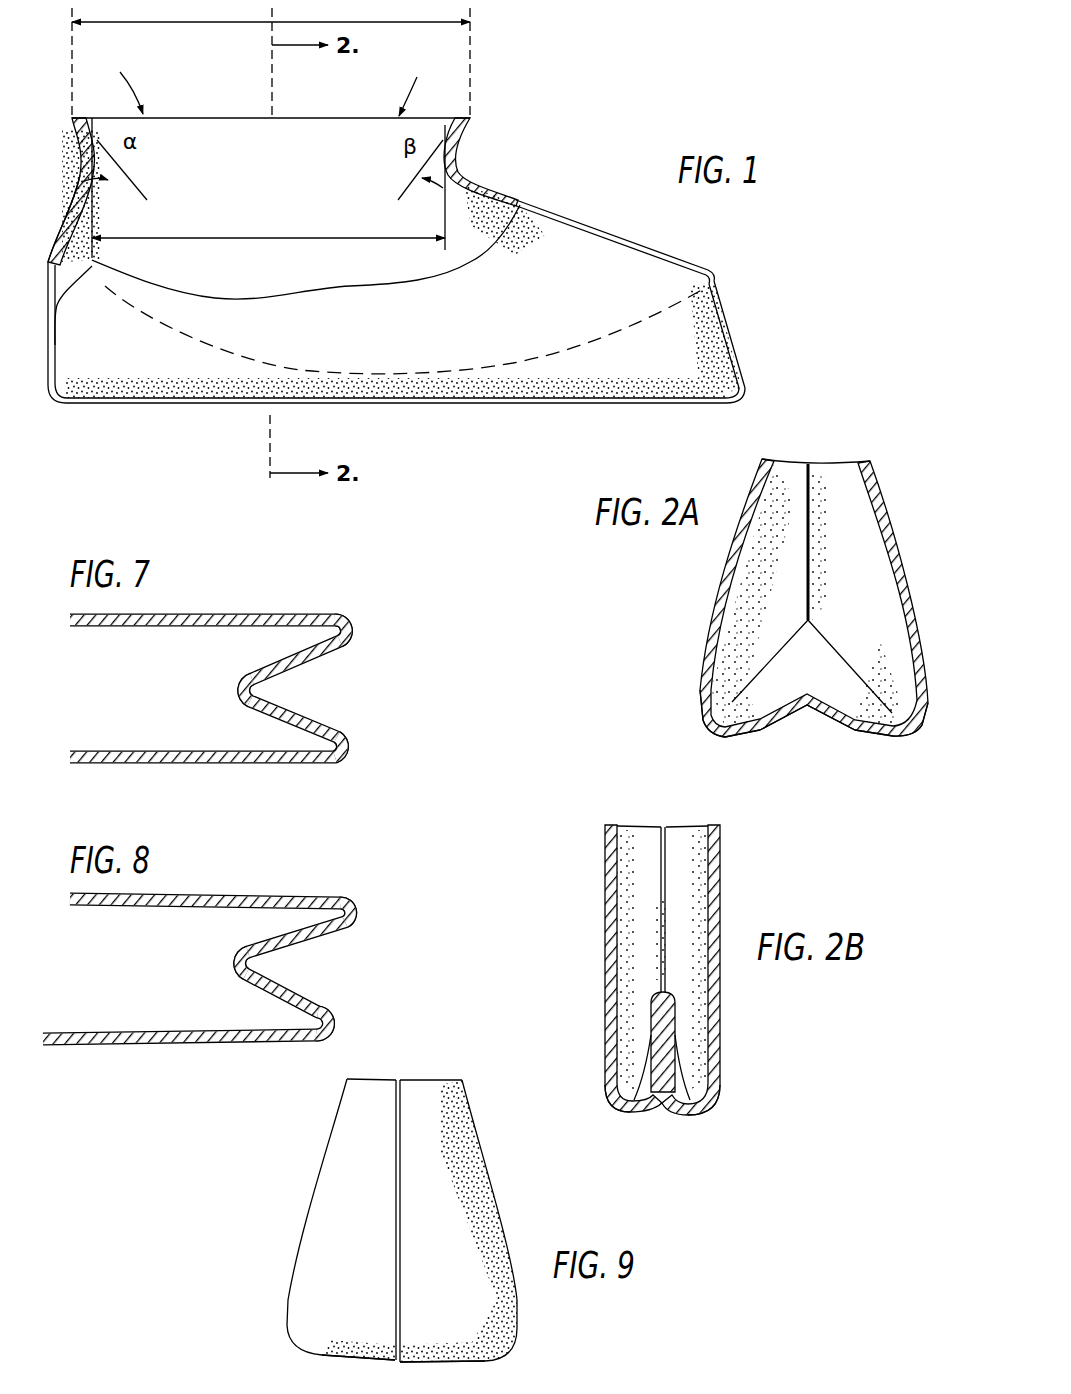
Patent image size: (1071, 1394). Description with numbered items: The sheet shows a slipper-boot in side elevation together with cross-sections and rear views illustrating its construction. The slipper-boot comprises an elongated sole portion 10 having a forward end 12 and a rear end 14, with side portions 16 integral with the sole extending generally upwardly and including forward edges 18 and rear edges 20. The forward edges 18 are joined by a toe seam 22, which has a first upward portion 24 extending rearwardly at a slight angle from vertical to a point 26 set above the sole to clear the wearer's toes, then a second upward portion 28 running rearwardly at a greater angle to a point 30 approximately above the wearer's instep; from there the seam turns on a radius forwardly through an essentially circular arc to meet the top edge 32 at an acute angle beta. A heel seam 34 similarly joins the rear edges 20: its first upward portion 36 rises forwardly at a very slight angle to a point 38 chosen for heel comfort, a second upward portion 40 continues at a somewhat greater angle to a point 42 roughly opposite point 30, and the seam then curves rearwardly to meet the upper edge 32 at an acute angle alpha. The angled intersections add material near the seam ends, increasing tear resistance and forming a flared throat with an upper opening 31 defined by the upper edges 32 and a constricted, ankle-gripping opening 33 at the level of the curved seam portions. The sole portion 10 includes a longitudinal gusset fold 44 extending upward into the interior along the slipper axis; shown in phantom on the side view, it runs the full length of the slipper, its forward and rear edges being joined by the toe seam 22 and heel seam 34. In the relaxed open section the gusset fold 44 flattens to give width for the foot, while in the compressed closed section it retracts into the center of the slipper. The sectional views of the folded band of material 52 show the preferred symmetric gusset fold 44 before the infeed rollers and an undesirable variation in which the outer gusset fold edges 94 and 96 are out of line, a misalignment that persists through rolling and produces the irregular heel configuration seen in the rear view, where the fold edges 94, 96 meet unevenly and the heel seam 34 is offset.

In FIG. 1, the elongated sole portion 10 is at (378, 405).
In FIG. 2A, the elongated sole portion 10 is at (744, 738).
In FIG. 2B, the elongated sole portion 10 is at (628, 1113).
In FIG. 1, the forward end 12 is at (735, 405).
In FIG. 1, the rear end 14 is at (68, 404).
In FIG. 1, the side portions 16 is at (450, 335).
In FIG. 2A, the side portions 16 is at (764, 624).
In FIG. 2B, the side portions 16 is at (605, 921).
In FIG. 9, the side portions 16 is at (345, 1143).
In FIG. 1, the forward edges 18 is at (716, 279).
In FIG. 1, the rear edges 20 is at (97, 285).
In FIG. 1, the toe seam 22 is at (584, 207).
In FIG. 2A, the toe seam 22 is at (810, 464).
In FIG. 2B, the toe seam 22 is at (660, 834).
In FIG. 1, the first upward portion 24 is at (733, 332).
In FIG. 1, the point 26 is at (707, 272).
In FIG. 1, the second upward portion 28 is at (620, 234).
In FIG. 1, the point 30 is at (466, 181).
In FIG. 1, the upper opening 31 is at (248, 27).
In FIG. 1, the top edge 32 is at (289, 118).
In FIG. 2A, the top edge 32 is at (763, 461).
In FIG. 2B, the top edge 32 is at (611, 825).
In FIG. 9, the top edge 32 is at (412, 1080).
In FIG. 1, the ankle-gripping opening 33 is at (246, 237).
In FIG. 1, the heel seam 34 is at (40, 290).
In FIG. 9, the heel seam 34 is at (401, 1233).
In FIG. 1, the front wall inner portion 36 is at (57, 341).
In FIG. 1, the point 38 is at (68, 200).
In FIG. 1, the second upward portion 40 is at (82, 174).
In FIG. 1, the point 42 is at (85, 150).
In FIG. 1, the longitudinal gusset fold 44 is at (432, 374).
In FIG. 2A, the longitudinal gusset fold 44 is at (809, 712).
In FIG. 2B, the longitudinal gusset fold 44 is at (665, 995).
In FIG. 7, the longitudinal gusset fold 44 is at (236, 686).
In FIG. 8, the longitudinal gusset fold 44 is at (232, 959).
In FIG. 7, the folded band of material 52 is at (222, 613).
In FIG. 8, the folded band of material 52 is at (246, 896).
In FIG. 2A, the outer gusset fold edge 94 is at (915, 731).
In FIG. 7, the outer gusset fold edge 94 is at (357, 628).
In FIG. 8, the outer gusset fold edge 94 is at (352, 916).
In FIG. 9, the outer gusset fold edge 94 is at (404, 1351).
In FIG. 2A, the outer gusset fold edge 96 is at (704, 723).
In FIG. 7, the outer gusset fold edge 96 is at (356, 743).
In FIG. 8, the outer gusset fold edge 96 is at (328, 1026).
In FIG. 9, the outer gusset fold edge 96 is at (395, 1349).